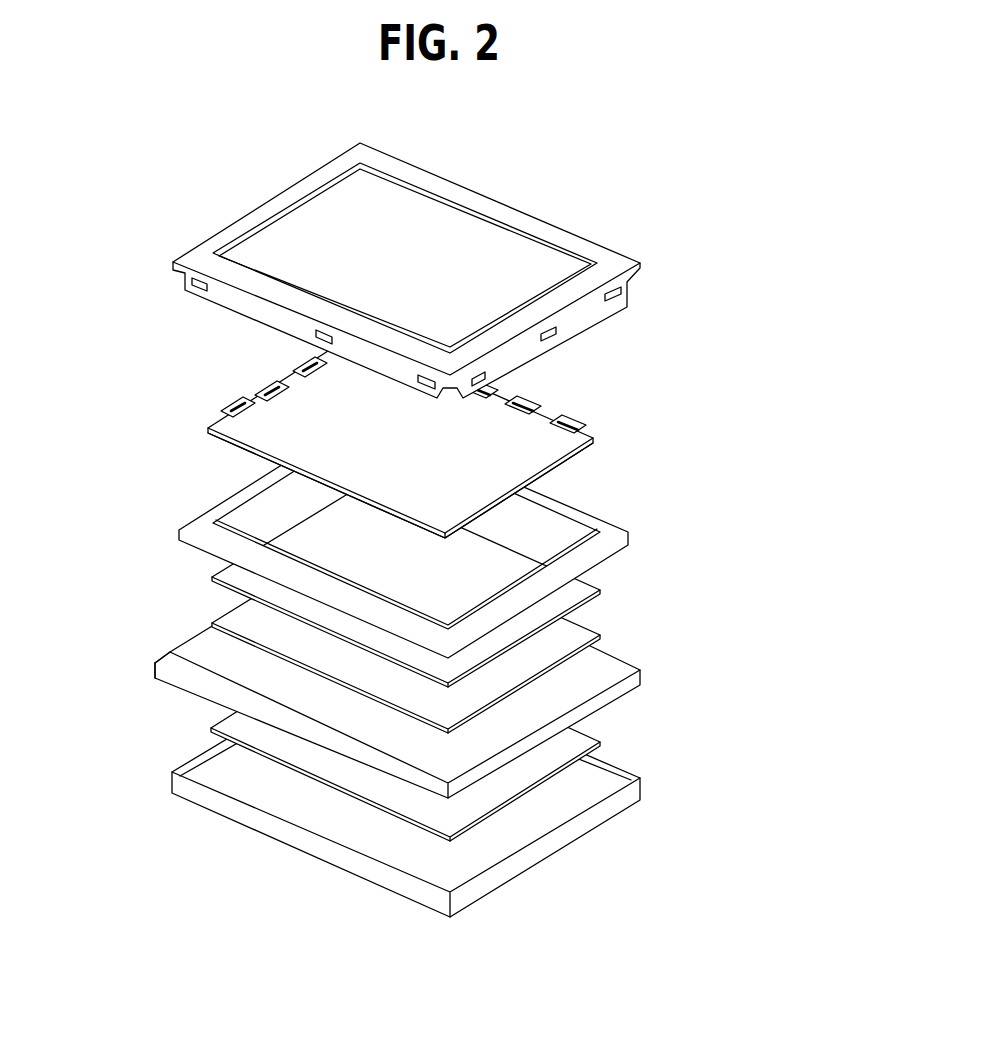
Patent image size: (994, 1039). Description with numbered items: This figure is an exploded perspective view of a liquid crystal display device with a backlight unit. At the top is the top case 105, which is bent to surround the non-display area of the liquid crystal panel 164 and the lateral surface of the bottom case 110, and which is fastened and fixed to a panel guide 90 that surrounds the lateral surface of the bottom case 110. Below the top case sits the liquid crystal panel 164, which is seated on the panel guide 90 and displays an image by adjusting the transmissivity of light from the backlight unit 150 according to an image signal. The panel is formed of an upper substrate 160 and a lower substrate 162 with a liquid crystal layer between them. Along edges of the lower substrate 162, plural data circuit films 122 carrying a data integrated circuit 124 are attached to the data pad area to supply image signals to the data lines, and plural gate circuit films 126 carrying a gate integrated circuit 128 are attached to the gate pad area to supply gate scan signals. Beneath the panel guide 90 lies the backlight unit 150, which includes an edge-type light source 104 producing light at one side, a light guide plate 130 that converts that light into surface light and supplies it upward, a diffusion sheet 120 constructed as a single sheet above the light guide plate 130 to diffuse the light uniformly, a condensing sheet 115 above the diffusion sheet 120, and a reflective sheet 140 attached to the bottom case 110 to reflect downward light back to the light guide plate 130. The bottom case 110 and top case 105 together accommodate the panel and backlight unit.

The top case 105 is at (510, 218).
The liquid crystal panel 164 is at (456, 435).
The upper substrate 160 is at (588, 434).
The lower substrate 162 is at (588, 448).
The data circuit films 122 is at (553, 415).
The data integrated circuit 124 is at (585, 417).
The gate circuit films 126 is at (222, 410).
The gate integrated circuit 128 is at (247, 397).
The panel guide 90 is at (612, 532).
The backlight unit 150 is at (455, 662).
The condensing sheet 115 is at (583, 583).
The diffusion sheet 120 is at (583, 630).
The light guide plate 130 is at (613, 663).
The reflective sheet 140 is at (583, 740).
The light source 104 is at (185, 681).
The bottom case 110 is at (623, 802).